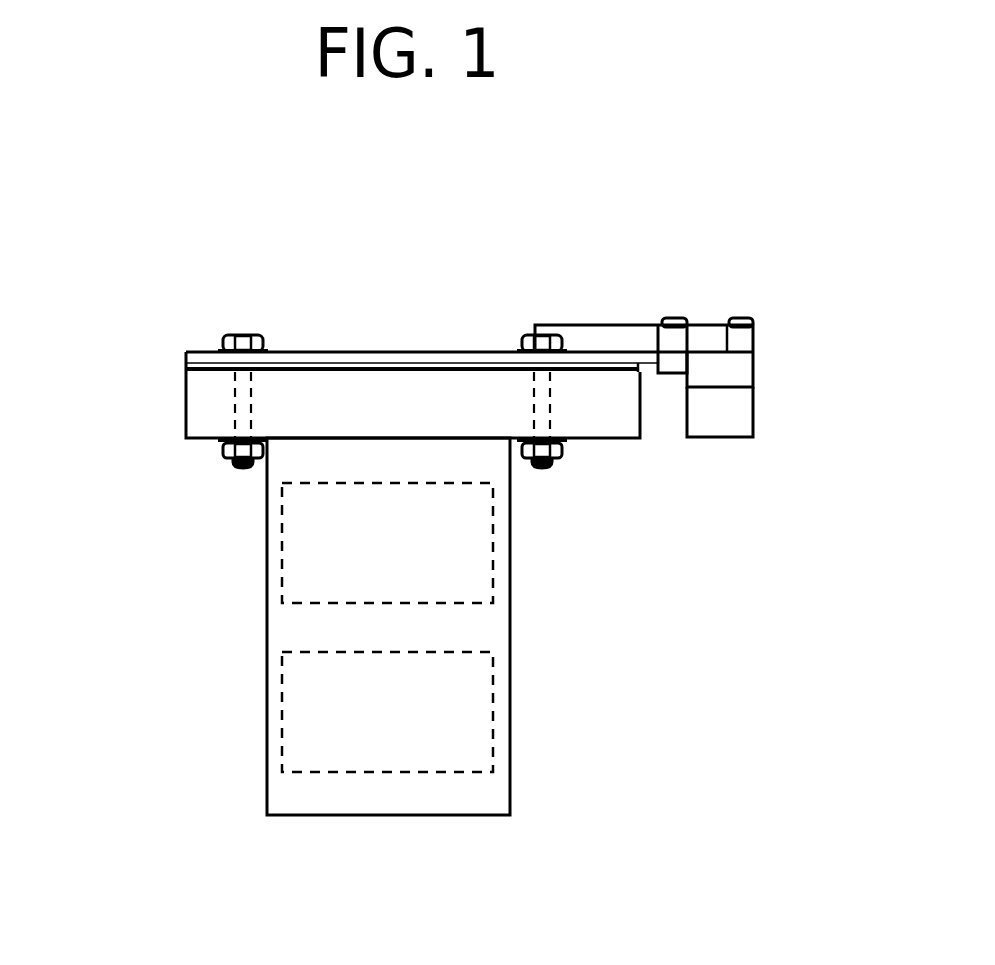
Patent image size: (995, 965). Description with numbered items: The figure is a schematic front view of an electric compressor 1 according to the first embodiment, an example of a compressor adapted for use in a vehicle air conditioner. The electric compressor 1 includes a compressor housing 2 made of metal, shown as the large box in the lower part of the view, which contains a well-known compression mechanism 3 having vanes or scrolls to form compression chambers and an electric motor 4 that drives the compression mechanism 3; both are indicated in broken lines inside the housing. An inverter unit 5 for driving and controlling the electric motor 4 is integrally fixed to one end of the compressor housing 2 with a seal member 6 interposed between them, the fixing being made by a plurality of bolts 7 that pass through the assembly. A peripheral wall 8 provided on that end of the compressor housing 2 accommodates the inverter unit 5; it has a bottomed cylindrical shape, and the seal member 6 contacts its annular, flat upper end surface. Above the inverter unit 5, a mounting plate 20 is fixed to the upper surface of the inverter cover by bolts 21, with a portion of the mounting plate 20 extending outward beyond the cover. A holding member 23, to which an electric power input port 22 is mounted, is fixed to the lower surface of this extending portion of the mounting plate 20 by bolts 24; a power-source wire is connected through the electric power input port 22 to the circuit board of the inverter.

The electric compressor 1 is at (155, 262).
The compressor housing 2 is at (267, 627).
The compression mechanism 3 is at (512, 712).
The electric motor 4 is at (512, 552).
The inverter unit 5 is at (319, 344).
The seal member 6 is at (400, 366).
The bolts 7 is at (243, 334).
The peripheral wall 8 is at (186, 405).
The mounting plate 20 is at (598, 325).
The bolts 21 is at (543, 323).
The electric power input port 22 is at (753, 413).
The holding member 23 is at (753, 370).
The bolts 24 is at (673, 320).